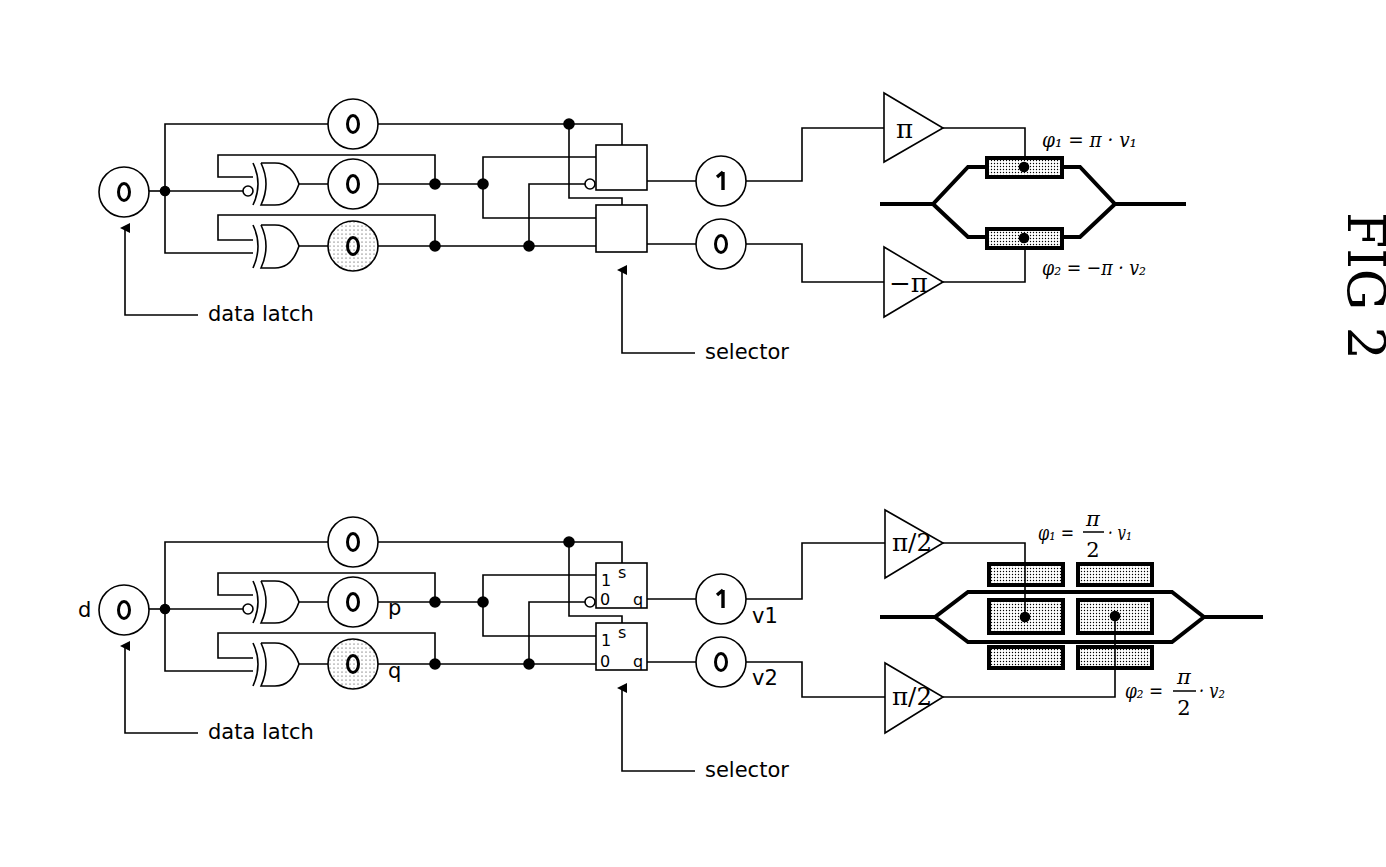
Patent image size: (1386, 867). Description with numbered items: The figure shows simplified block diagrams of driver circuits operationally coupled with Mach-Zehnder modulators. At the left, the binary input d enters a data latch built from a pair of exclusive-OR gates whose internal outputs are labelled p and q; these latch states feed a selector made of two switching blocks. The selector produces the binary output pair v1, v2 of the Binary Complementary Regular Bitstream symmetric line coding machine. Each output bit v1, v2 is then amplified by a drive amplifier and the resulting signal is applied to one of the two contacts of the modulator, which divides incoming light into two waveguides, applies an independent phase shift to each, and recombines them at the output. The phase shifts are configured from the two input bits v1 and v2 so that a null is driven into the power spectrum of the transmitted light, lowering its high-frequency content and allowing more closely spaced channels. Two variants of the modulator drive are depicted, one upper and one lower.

The binary input d is at (121, 192).
The first latch output p is at (350, 182).
The second latch output q is at (407, 243).
The first output bit v1 is at (740, 169).
The second output bit v2 is at (740, 243).